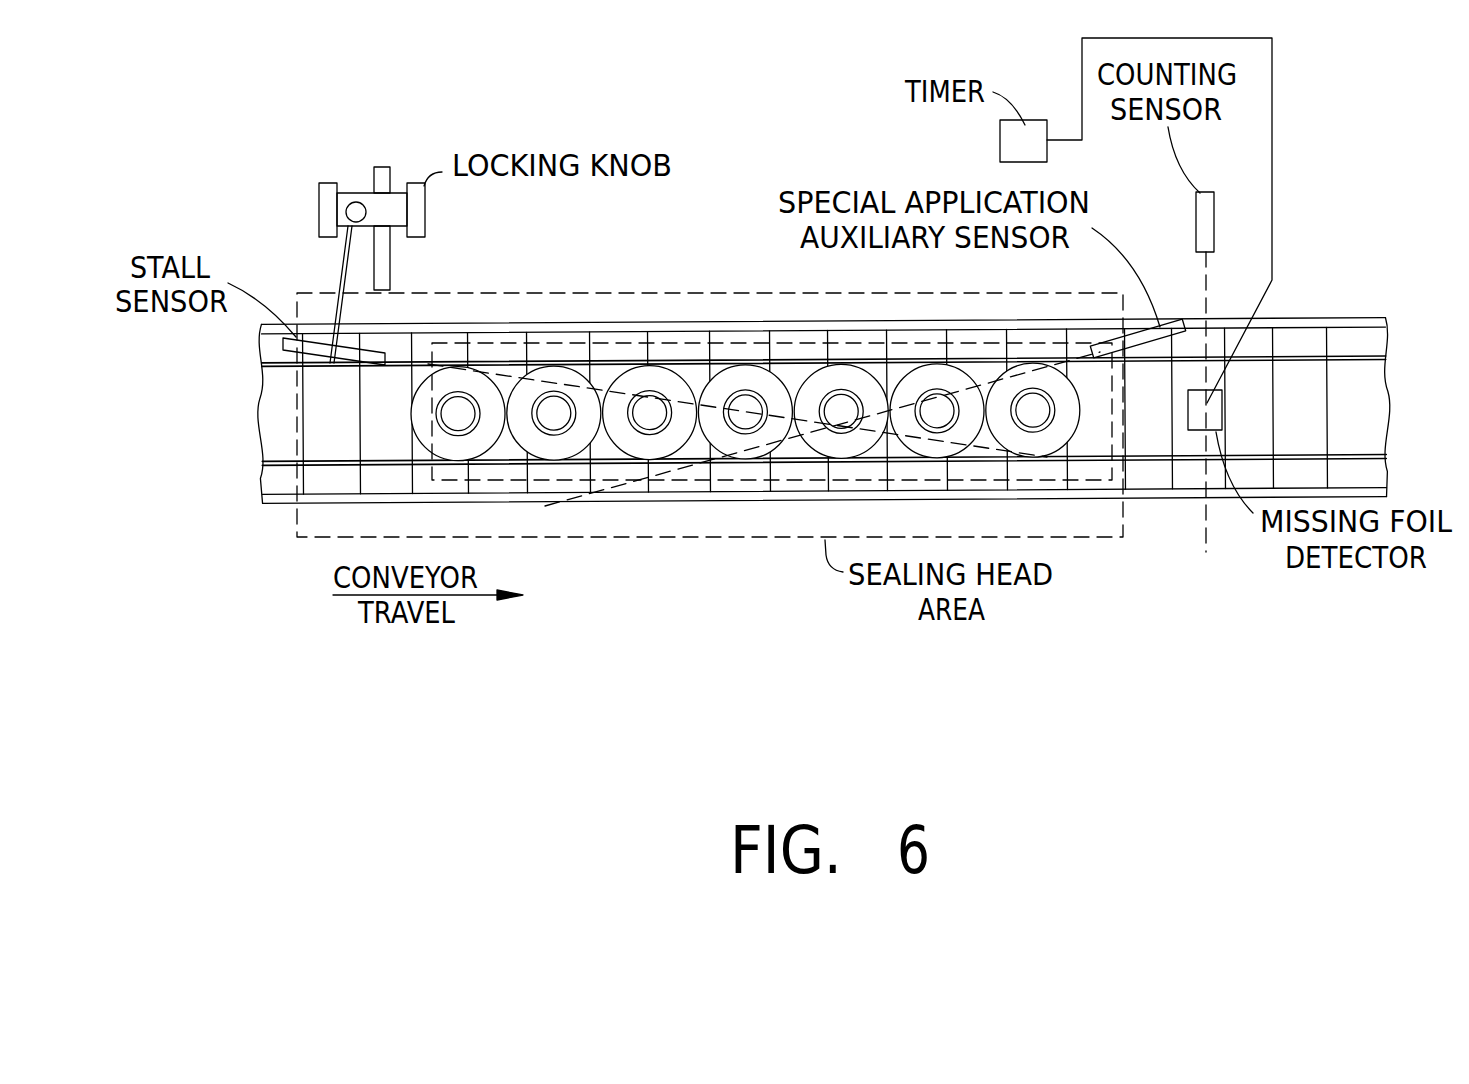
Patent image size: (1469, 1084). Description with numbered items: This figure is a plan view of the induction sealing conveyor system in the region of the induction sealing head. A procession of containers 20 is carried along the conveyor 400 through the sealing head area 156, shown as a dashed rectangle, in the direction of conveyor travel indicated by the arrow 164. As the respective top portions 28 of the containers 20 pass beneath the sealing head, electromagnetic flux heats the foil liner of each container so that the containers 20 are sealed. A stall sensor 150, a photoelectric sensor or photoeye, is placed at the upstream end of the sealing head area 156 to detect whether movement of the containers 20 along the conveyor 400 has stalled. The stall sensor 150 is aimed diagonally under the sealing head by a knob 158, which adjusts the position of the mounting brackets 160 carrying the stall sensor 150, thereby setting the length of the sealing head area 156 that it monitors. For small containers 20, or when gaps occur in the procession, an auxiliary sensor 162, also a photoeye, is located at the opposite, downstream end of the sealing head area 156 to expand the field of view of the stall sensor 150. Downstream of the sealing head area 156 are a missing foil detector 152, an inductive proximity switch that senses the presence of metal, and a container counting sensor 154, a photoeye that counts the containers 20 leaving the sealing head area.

The container 20 is at (573, 455).
The top portion 28 is at (455, 435).
The stall sensor 150 is at (285, 347).
The missing foil detector 152 is at (1197, 432).
The container counting sensor 154 is at (1214, 228).
The sealing head area 156 is at (765, 540).
The knob 158 is at (426, 212).
The mounting bracket 160 is at (338, 275).
The auxiliary sensor 162 is at (1187, 318).
The arrow 164 is at (472, 597).
The conveyor 400 is at (1087, 465).